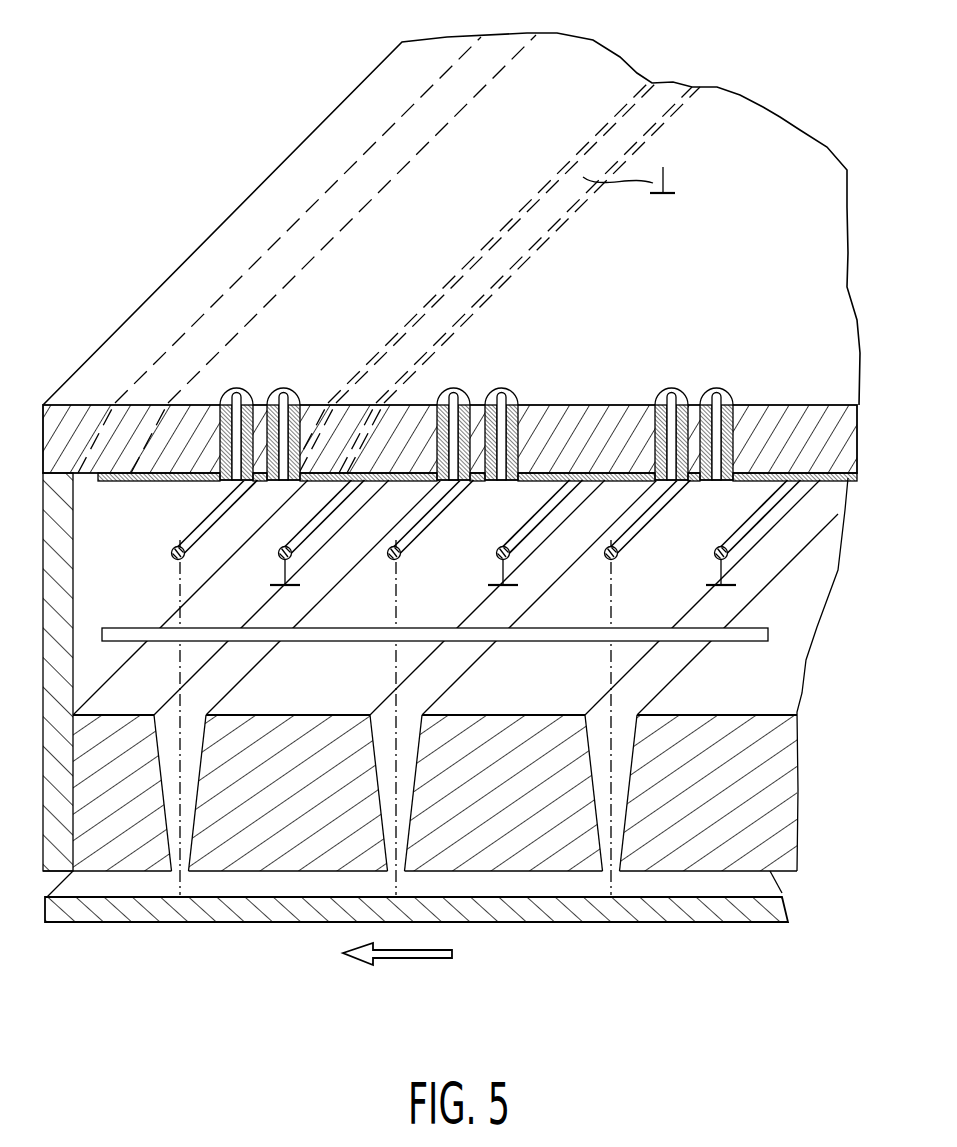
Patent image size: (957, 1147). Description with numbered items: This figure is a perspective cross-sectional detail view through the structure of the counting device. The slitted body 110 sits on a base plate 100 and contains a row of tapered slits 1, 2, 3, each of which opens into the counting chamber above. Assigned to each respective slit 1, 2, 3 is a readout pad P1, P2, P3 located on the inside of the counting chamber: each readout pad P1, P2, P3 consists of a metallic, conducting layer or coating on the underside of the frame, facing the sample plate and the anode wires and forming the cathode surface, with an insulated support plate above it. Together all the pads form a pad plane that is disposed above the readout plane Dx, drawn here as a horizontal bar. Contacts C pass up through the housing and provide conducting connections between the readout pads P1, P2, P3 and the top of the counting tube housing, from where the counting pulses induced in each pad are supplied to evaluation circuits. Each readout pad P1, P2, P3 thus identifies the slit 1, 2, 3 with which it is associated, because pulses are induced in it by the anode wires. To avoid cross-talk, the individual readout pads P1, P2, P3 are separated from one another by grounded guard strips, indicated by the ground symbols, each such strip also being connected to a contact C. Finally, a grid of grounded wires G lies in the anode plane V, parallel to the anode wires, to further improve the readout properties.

The channel body block 110 is at (782, 798).
The base plate 100 is at (750, 897).
The slit 1 is at (192, 765).
The slit 2 is at (409, 765).
The slit 3 is at (625, 762).
The contacts C is at (240, 390).
The readout pad P1 is at (160, 481).
The readout pad P2 is at (410, 482).
The readout pad P3 is at (626, 482).
The grounded wires G is at (730, 564).
The anode plane V is at (608, 561).
The readout plane Dx is at (748, 622).